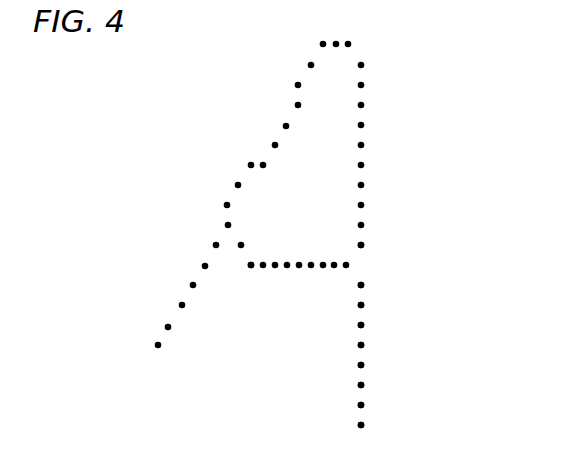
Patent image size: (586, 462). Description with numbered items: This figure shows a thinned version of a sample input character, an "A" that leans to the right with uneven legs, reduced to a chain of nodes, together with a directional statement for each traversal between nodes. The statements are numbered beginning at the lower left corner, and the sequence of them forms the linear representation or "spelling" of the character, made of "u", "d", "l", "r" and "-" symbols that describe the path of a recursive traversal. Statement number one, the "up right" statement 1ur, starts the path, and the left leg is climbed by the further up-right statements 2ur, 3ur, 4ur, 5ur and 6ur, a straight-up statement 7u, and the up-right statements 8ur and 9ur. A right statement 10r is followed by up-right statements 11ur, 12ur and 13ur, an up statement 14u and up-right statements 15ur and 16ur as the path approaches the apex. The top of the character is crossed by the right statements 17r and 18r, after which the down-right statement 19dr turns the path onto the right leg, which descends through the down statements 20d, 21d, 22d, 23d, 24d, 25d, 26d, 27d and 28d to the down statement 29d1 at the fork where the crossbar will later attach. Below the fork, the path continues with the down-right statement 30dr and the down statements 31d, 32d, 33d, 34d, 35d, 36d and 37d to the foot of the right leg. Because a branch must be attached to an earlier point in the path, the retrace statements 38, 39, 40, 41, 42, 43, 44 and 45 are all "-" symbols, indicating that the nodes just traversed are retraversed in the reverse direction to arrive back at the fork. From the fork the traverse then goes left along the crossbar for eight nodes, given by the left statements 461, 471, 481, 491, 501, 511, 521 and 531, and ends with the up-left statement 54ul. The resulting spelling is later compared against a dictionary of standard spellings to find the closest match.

The directional statement 1ur is at (155, 335).
The directional statement 2ur is at (170, 312).
The directional statement 3ur is at (187, 290).
The directional statement 4ur is at (192, 271).
The directional statement 5ur is at (212, 252).
The directional statement 6ur is at (222, 233).
The directional statement 7u is at (227, 212).
The directional statement 8ur is at (232, 193).
The directional statement 9ur is at (245, 173).
The directional statement 10r is at (257, 160).
The directional statement 11ur is at (270, 153).
The directional statement 12ur is at (280, 135).
The directional statement 13ur is at (288, 114).
The directional statement 14u is at (296, 93).
The directional statement 15ur is at (300, 73).
The directional statement 16ur is at (308, 53).
The directional statement 17r is at (330, 40).
The directional statement 18r is at (343, 40).
The directional statement 19dr is at (357, 55).
The directional statement 20d is at (370, 73).
The directional statement 21d is at (365, 98).
The directional statement 22d is at (370, 117).
The directional statement 23d is at (365, 140).
The directional statement 24d is at (370, 157).
The directional statement 25d is at (365, 180).
The directional statement 26d is at (370, 197).
The directional statement 27d is at (365, 219).
The directional statement 28d is at (370, 238).
The directional statement 29d1 is at (365, 259).
The directional statement 30dr is at (364, 276).
The directional statement 31d is at (365, 296).
The directional statement 32d is at (365, 318).
The directional statement 33d is at (365, 338).
The directional statement 34d is at (365, 360).
The directional statement 35d is at (365, 379).
The directional statement 36d is at (365, 401).
The directional statement 37d is at (365, 421).
The retrace statement 38 is at (358, 411).
The retrace statement 39 is at (355, 392).
The retrace statement 40 is at (358, 370).
The retrace statement 41 is at (355, 352).
The retrace statement 42 is at (358, 330).
The retrace statement 43 is at (355, 311).
The retrace statement 44 is at (358, 289).
The retrace statement 45 is at (348, 276).
The directional statement 461 is at (345, 257).
The directional statement 471 is at (327, 258).
The directional statement 481 is at (310, 257).
The directional statement 491 is at (296, 260).
The directional statement 501 is at (287, 258).
The directional statement 511 is at (278, 260).
The directional statement 521 is at (262, 270).
The directional statement 531 is at (252, 270).
The directional statement 54ul is at (237, 270).